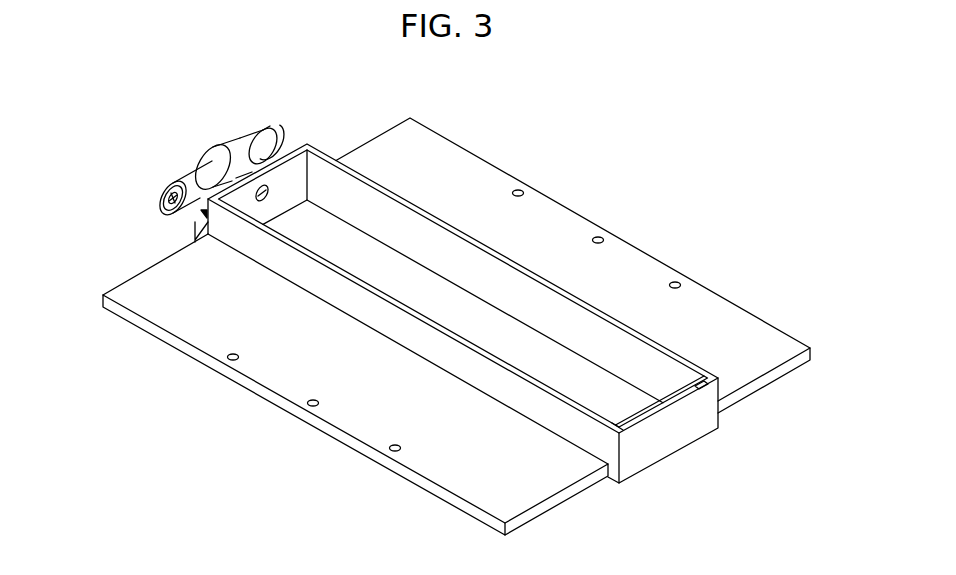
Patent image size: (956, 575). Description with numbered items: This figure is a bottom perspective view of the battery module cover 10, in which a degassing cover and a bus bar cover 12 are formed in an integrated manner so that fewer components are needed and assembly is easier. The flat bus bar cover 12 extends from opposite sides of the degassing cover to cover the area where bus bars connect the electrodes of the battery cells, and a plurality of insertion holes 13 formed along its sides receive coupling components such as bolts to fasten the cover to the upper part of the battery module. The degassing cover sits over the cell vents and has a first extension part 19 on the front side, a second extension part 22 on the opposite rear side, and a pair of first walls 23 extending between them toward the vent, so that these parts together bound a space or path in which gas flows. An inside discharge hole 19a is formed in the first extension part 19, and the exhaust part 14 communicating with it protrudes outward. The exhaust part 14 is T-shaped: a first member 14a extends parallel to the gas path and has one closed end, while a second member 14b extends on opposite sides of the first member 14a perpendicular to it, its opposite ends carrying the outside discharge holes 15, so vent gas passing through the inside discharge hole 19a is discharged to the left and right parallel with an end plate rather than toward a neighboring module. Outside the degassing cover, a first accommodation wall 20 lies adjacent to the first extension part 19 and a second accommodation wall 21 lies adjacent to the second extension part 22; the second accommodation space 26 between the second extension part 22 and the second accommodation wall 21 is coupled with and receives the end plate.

The battery module cover 10 is at (740, 210).
The bus bar cover 12 is at (741, 330).
The insertion hole 13 is at (676, 282).
The exhaust part 14 is at (178, 161).
The first member 14a is at (208, 153).
The second member 14b is at (243, 137).
The outside discharge hole 15 is at (168, 210).
The first extension part 19 is at (243, 148).
The inside discharge hole 19a is at (270, 193).
The first accommodation wall 20 is at (197, 217).
The second accommodation wall 21 is at (672, 404).
The second extension part 22 is at (630, 420).
The first walls 23 is at (620, 336).
The second accommodation space 26 is at (702, 387).